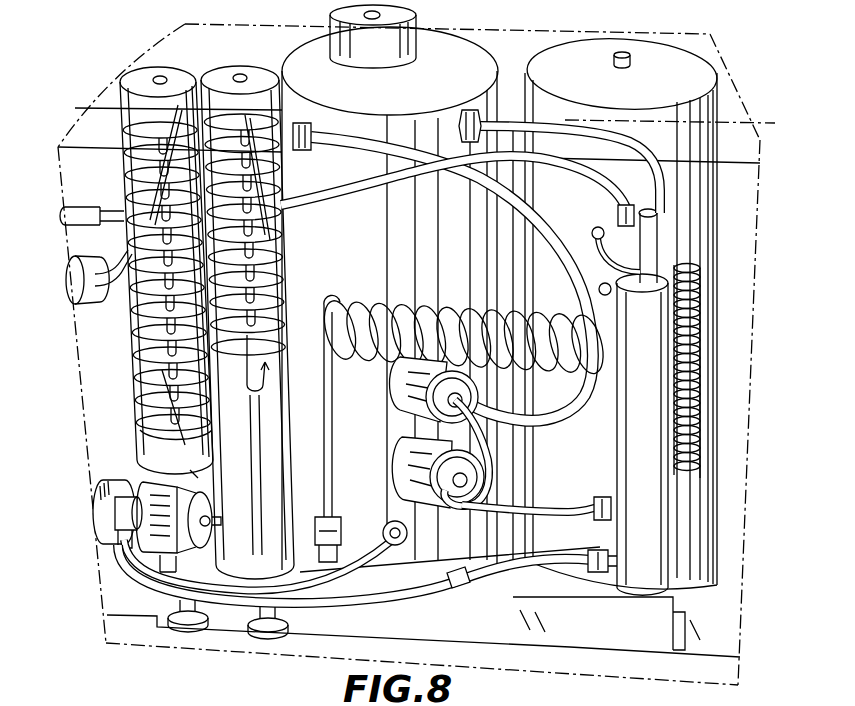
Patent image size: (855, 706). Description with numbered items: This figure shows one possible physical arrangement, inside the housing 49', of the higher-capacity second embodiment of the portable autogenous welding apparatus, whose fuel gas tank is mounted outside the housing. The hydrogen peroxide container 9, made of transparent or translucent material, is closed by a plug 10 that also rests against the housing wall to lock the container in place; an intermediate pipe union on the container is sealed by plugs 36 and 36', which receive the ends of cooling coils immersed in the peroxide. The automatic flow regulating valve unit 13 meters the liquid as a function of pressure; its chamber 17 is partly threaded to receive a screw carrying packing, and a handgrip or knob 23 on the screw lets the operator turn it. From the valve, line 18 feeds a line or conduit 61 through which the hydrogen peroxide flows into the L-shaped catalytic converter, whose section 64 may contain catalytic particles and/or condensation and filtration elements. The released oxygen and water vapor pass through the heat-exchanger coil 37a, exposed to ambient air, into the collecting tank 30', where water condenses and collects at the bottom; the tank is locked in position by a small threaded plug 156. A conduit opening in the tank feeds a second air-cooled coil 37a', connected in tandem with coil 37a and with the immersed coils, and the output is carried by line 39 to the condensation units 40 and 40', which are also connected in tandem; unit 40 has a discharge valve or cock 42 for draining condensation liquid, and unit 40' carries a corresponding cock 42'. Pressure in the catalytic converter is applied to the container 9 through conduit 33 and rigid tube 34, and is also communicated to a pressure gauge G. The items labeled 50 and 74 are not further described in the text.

The container 9 is at (476, 56).
The plug 10 is at (356, 56).
The automatic fluid flow regulating valve 13 is at (136, 468).
The chamber 17 is at (334, 200).
The line 18 is at (393, 603).
The handgrip or knob 23 is at (93, 515).
The collecting tank 30' is at (653, 311).
The line or conduit 33 is at (625, 158).
The rigid tube 34 is at (413, 106).
The plug 36 is at (416, 390).
The plug 36' is at (436, 465).
The coil 37a is at (462, 413).
The coil 37a' is at (717, 371).
The line or conduit 39 is at (552, 214).
The condensation unit 40 is at (247, 311).
The condensation unit 40' is at (150, 261).
The discharge valve or cock 42 is at (268, 650).
The second foot 42' is at (192, 642).
The housing 49' is at (688, 123).
The base 50 is at (239, 700).
The line or conduit 61 is at (507, 577).
The portion 64 is at (660, 418).
The connecting tube 74 is at (488, 468).
The small threaded plug 156 is at (616, 64).
The pressure gauge G is at (72, 303).